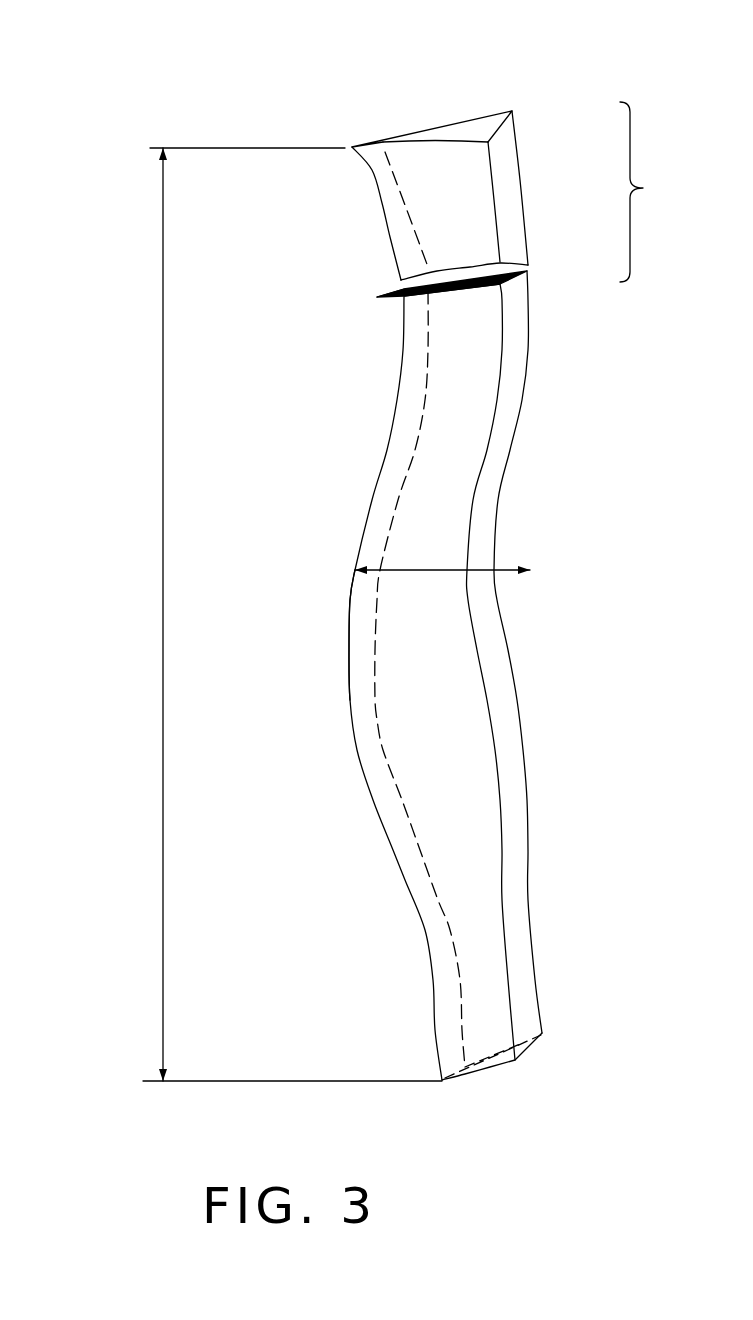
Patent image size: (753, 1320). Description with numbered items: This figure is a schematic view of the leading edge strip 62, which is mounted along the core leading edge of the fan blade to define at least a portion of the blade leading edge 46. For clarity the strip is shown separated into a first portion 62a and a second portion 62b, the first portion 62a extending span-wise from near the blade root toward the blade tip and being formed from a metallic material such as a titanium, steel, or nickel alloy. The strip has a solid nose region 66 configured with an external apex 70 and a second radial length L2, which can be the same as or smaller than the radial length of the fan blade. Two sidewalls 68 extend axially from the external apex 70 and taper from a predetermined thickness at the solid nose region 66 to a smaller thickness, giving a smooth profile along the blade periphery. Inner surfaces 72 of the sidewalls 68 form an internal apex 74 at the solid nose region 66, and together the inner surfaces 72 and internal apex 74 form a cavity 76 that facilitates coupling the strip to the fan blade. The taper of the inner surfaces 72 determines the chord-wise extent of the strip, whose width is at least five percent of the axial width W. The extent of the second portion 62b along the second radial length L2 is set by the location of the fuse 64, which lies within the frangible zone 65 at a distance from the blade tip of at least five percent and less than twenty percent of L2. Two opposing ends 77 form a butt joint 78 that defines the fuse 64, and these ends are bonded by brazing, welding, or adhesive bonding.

The leading edge strip 62 is at (133, 78).
The first portion 62a is at (400, 650).
The second portion 62b is at (477, 227).
The fuse 64 is at (527, 272).
The frangible zone 65 is at (643, 188).
The solid nose region 66 is at (368, 142).
The sidewalls 68 is at (457, 142).
The external apex 70 is at (385, 453).
The inner surfaces 72 is at (503, 200).
The internal apex 74 is at (378, 725).
The cavity 76 is at (515, 872).
The opposing ends 77 is at (380, 296).
The butt joint 78 is at (393, 282).
The blade leading edge 46 is at (348, 615).
The second radial length L2 is at (163, 545).
The axial width W is at (406, 567).